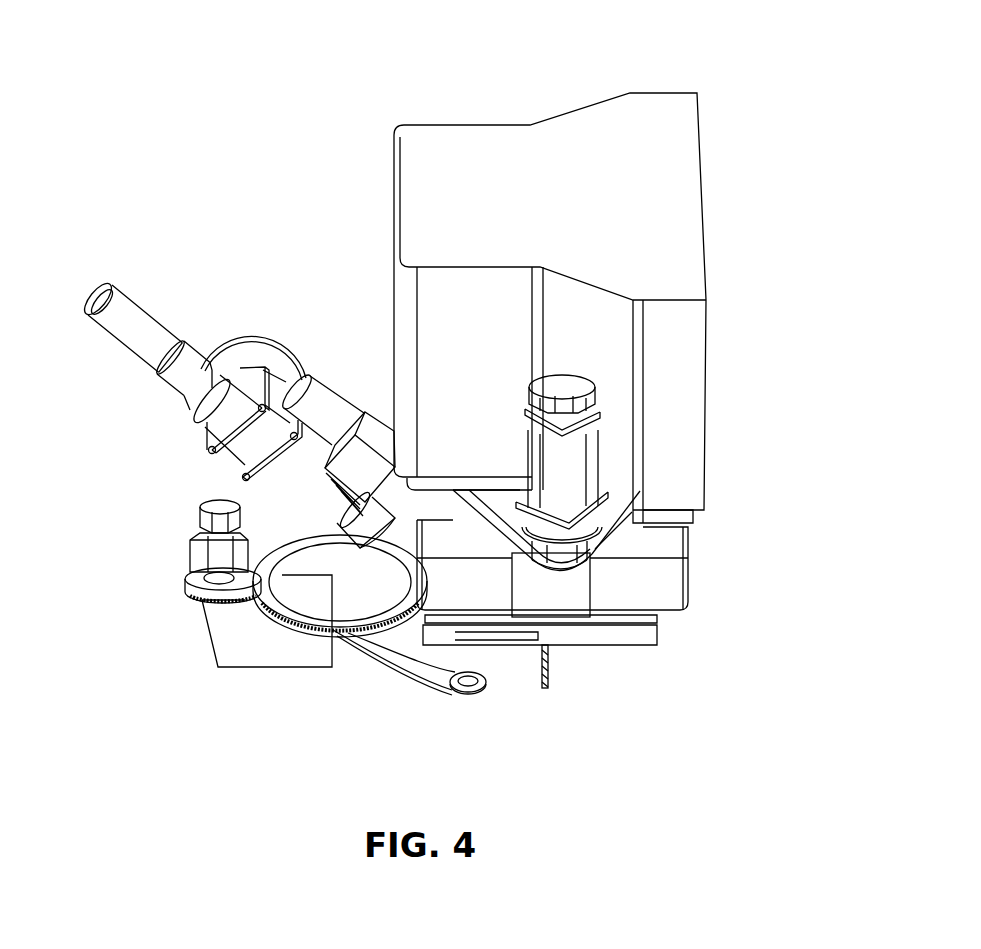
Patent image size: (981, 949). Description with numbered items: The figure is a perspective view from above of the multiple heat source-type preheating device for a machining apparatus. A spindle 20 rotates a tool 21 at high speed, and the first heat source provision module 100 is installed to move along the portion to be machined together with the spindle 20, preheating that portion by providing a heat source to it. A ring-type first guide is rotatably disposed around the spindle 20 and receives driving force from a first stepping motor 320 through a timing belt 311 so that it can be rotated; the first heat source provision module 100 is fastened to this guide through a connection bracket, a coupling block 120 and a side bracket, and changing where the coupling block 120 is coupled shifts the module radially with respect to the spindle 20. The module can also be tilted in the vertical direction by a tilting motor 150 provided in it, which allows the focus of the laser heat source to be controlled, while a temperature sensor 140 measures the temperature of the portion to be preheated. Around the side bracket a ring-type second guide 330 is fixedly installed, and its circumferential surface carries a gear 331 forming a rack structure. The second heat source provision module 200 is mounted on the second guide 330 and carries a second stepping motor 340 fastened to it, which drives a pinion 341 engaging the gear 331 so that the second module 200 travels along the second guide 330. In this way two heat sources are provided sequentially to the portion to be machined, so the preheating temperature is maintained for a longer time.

The spindle 20 is at (484, 128).
The tool 21 is at (548, 690).
The first heat source provision module 100 is at (141, 300).
The coupling block 120 is at (567, 608).
The temperature sensor 140 is at (317, 400).
The tilting motor 150 is at (253, 337).
The second heat source provision module 200 is at (460, 703).
The timing belt 311 is at (600, 547).
The first stepping motor 320 is at (587, 463).
The second guide 330 is at (273, 610).
The gear 331 is at (260, 593).
The second stepping motor 340 is at (195, 547).
The pinion 341 is at (182, 590).